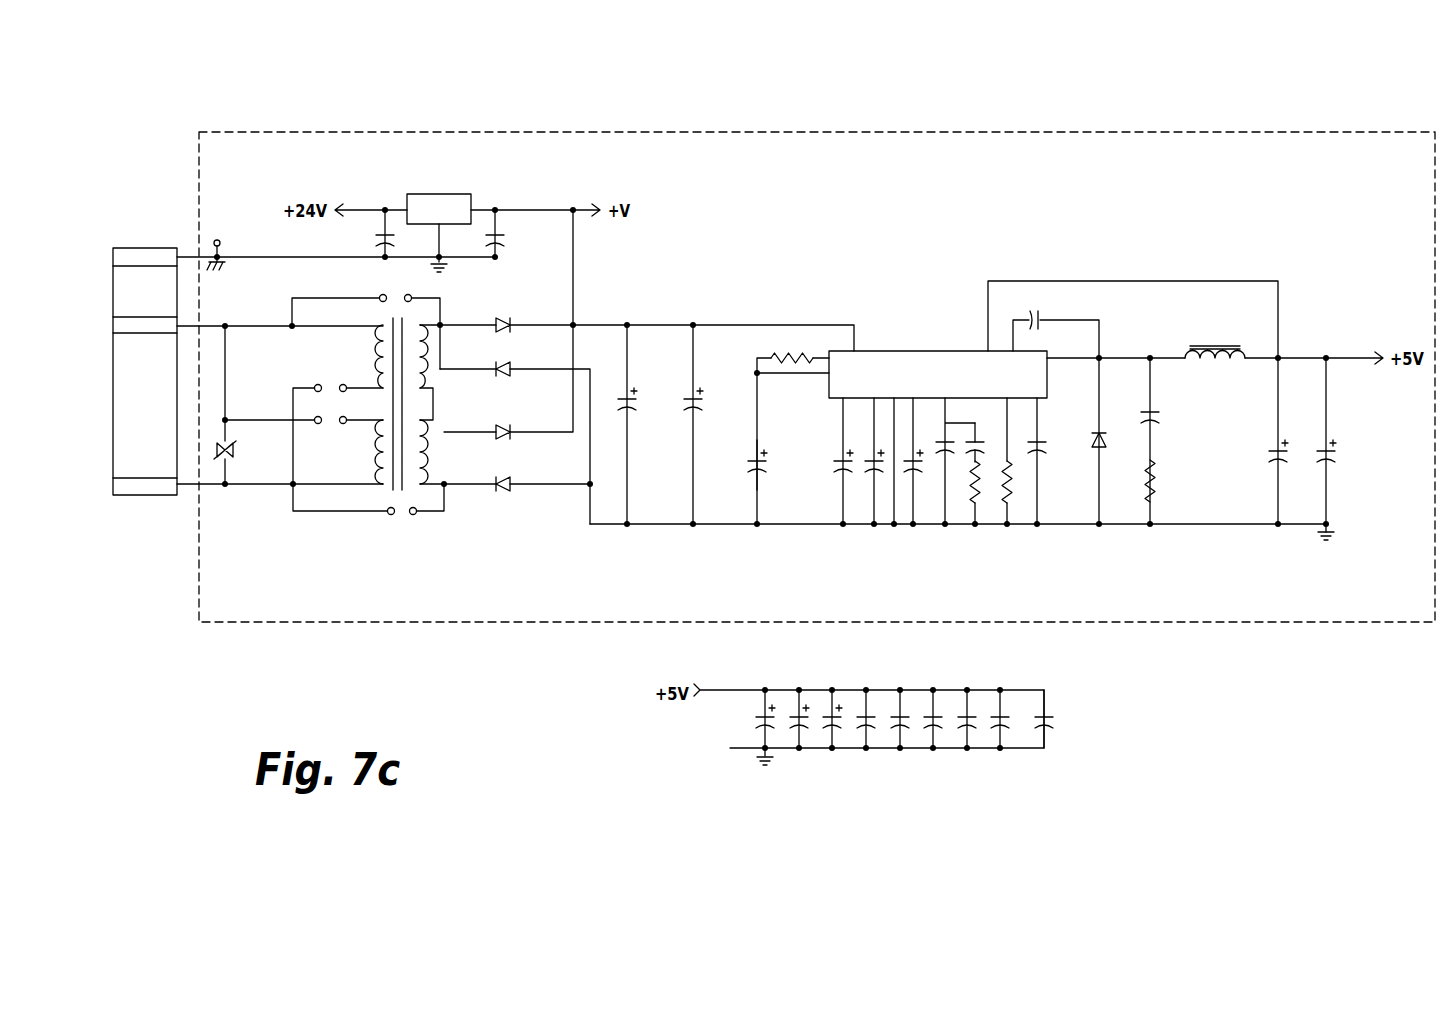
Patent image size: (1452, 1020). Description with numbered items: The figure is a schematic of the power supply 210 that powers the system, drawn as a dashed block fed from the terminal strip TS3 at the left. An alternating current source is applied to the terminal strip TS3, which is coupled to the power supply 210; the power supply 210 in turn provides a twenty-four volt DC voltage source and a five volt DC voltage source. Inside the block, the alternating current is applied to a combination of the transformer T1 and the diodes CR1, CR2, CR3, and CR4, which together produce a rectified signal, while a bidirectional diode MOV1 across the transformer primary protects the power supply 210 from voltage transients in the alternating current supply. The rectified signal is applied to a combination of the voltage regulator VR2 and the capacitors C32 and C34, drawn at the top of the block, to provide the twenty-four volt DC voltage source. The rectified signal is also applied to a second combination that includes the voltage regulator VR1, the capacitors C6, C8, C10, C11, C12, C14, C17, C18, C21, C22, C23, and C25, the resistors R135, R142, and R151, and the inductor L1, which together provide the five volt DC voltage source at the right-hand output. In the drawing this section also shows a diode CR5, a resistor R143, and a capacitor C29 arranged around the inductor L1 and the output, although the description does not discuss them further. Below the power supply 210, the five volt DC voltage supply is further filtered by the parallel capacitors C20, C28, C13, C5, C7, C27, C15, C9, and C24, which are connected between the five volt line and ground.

The power supply 210 is at (1040, 132).
The terminal strip TS3 is at (145, 359).
The bidirectional diode MOV1 is at (250, 451).
The transformer T1 is at (372, 405).
The diode CR1 is at (481, 424).
The diode CR2 is at (481, 474).
The diode CR3 is at (481, 317).
The diode CR4 is at (481, 361).
The catch diode CR5 is at (1083, 441).
The voltage regulator VR2 is at (439, 209).
The voltage regulator VR1 is at (938, 374).
The capacitor C34 is at (366, 233).
The capacitor C32 is at (521, 233).
The capacitor C22 is at (642, 424).
The capacitor C23 is at (678, 424).
The resistor R142 is at (796, 347).
The capacitor C8 is at (747, 465).
The capacitor C6 is at (831, 461).
The capacitor C10 is at (865, 461).
The capacitor C18 is at (923, 461).
The capacitor C12 is at (948, 461).
The capacitor C11 is at (985, 438).
The resistor R135 is at (964, 492).
The resistor R151 is at (1017, 461).
The capacitor C25 is at (1052, 461).
The capacitor C14 is at (1054, 310).
The capacitor C17 is at (1167, 441).
The resistor R143 is at (1176, 481).
The inductor L1 is at (1215, 341).
The output capacitor C29 is at (1262, 441).
The capacitor C21 is at (1342, 441).
The capacitor C20 is at (743, 719).
The capacitor C28 is at (795, 703).
The capacitor C13 is at (830, 703).
The capacitor C5 is at (864, 703).
The capacitor C7 is at (899, 703).
The capacitor C27 is at (933, 703).
The capacitor C15 is at (968, 703).
The capacitor C9 is at (1001, 703).
The capacitor C24 is at (1069, 719).